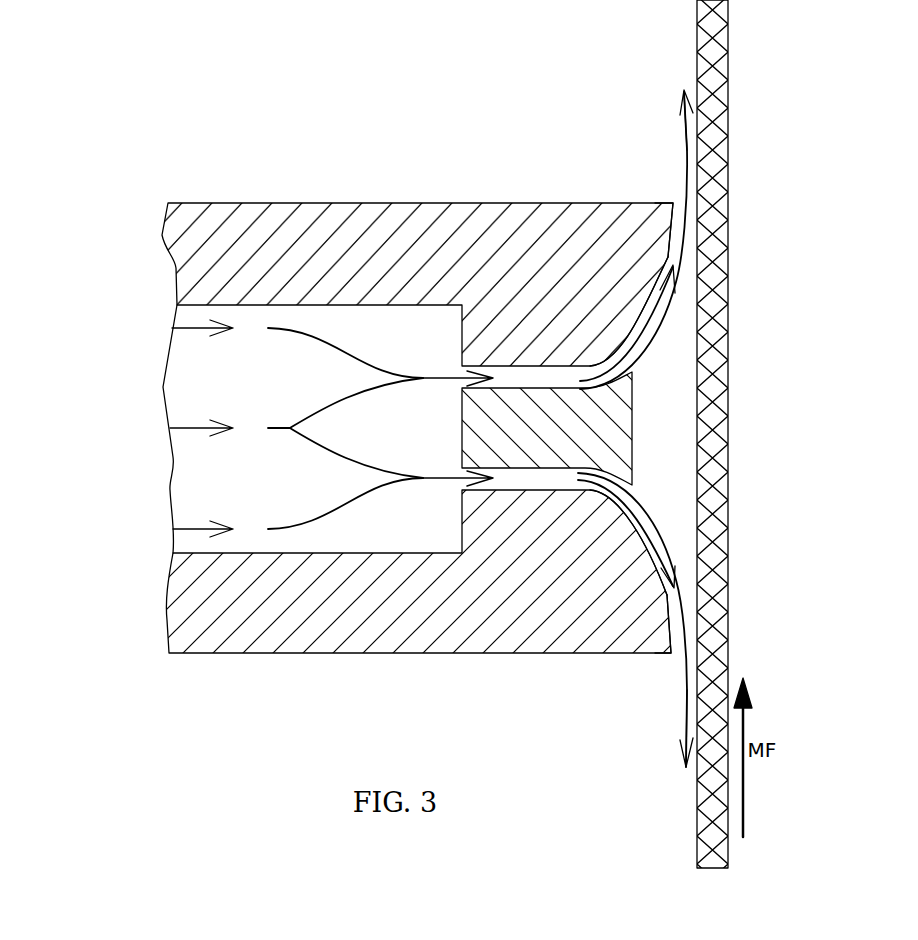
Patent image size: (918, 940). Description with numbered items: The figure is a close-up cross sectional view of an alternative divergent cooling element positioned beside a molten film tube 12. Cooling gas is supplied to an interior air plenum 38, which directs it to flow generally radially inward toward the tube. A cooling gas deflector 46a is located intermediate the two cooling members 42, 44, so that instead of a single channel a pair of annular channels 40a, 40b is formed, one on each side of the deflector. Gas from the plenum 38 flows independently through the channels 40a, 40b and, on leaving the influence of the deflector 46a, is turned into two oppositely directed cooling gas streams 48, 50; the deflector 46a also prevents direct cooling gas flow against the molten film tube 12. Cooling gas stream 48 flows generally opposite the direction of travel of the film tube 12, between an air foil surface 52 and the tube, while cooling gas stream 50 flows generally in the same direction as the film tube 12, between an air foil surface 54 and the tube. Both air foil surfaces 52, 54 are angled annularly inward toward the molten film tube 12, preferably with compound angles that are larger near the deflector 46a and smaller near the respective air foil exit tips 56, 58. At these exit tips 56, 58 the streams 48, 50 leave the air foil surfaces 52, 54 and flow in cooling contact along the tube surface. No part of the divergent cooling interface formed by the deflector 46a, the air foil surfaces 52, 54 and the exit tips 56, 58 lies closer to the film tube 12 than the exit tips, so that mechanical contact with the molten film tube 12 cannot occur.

The molten film tube 12 is at (730, 115).
The interior air plenum 38 is at (163, 388).
The annular channel 40a is at (543, 480).
The annular channel 40b is at (543, 375).
The cooling member 42 is at (368, 625).
The cooling member 44 is at (359, 218).
The cooling gas deflector 46a is at (610, 436).
The cooling gas stream 48 is at (685, 717).
The cooling gas stream 50 is at (687, 140).
The air foil surface 52 is at (667, 603).
The air foil surface 54 is at (668, 257).
The air foil exit tip 56 is at (671, 653).
The air foil exit tip 58 is at (672, 203).